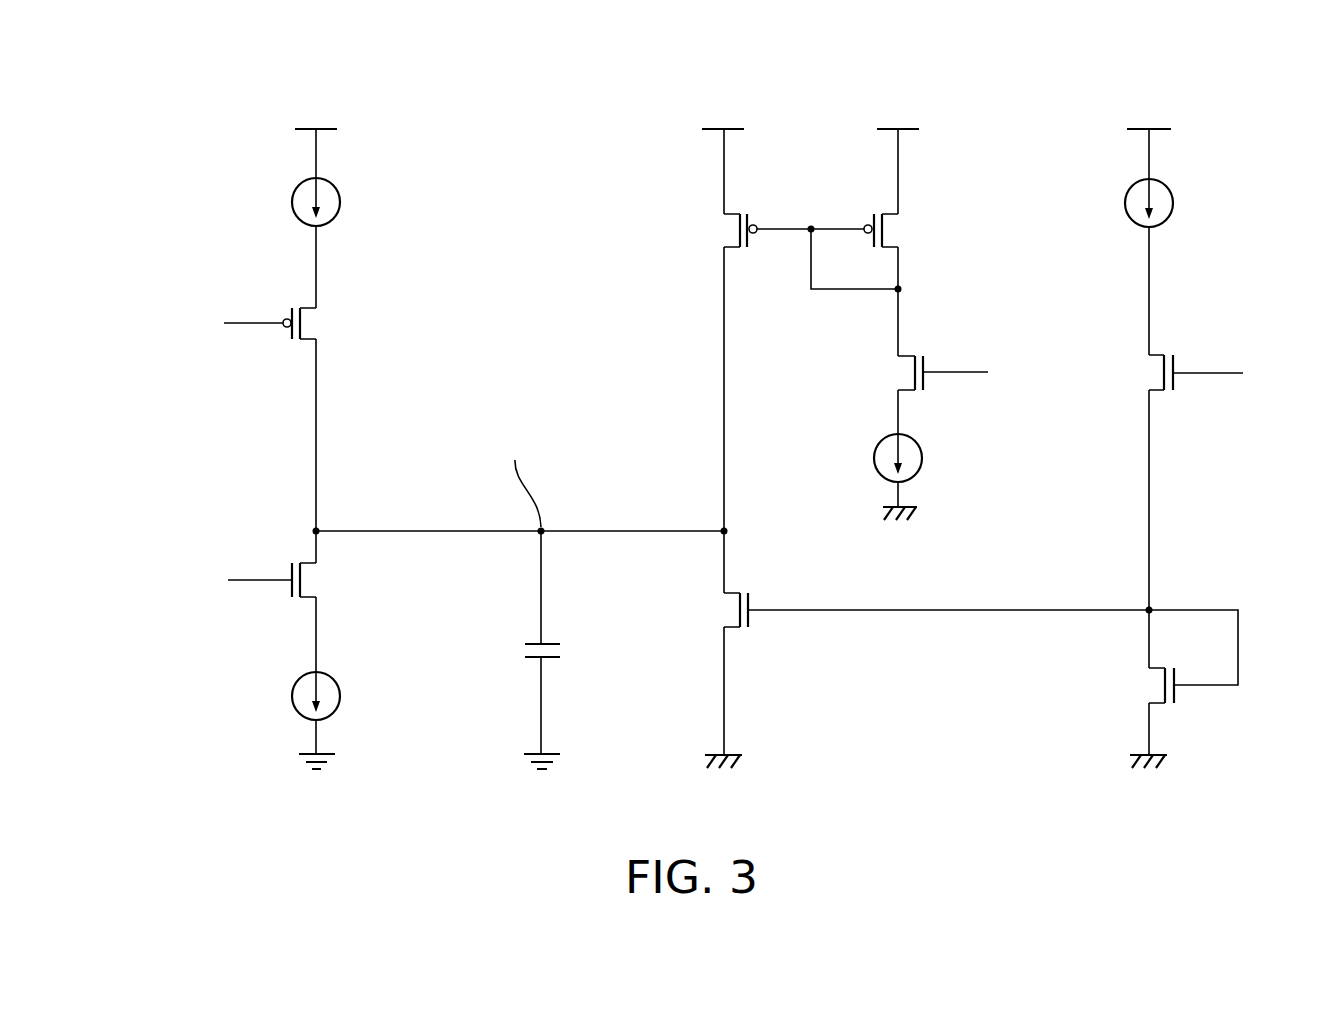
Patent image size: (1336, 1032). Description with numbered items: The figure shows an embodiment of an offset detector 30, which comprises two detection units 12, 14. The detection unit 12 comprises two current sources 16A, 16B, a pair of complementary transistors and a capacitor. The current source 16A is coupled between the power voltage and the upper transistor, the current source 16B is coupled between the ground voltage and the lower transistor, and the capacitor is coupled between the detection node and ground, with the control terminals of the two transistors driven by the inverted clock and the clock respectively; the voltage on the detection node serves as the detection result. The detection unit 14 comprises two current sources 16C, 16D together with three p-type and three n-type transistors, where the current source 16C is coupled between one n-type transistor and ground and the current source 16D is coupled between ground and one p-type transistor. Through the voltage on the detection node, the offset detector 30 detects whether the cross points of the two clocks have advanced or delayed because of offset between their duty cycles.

The offset detector 30 is at (170, 131).
The detection unit 12 is at (562, 791).
The detection unit 14 is at (1168, 791).
The current source 16A is at (292, 200).
The current source 16B is at (292, 694).
The current source 16C is at (874, 455).
The current source 16D is at (1124, 201).